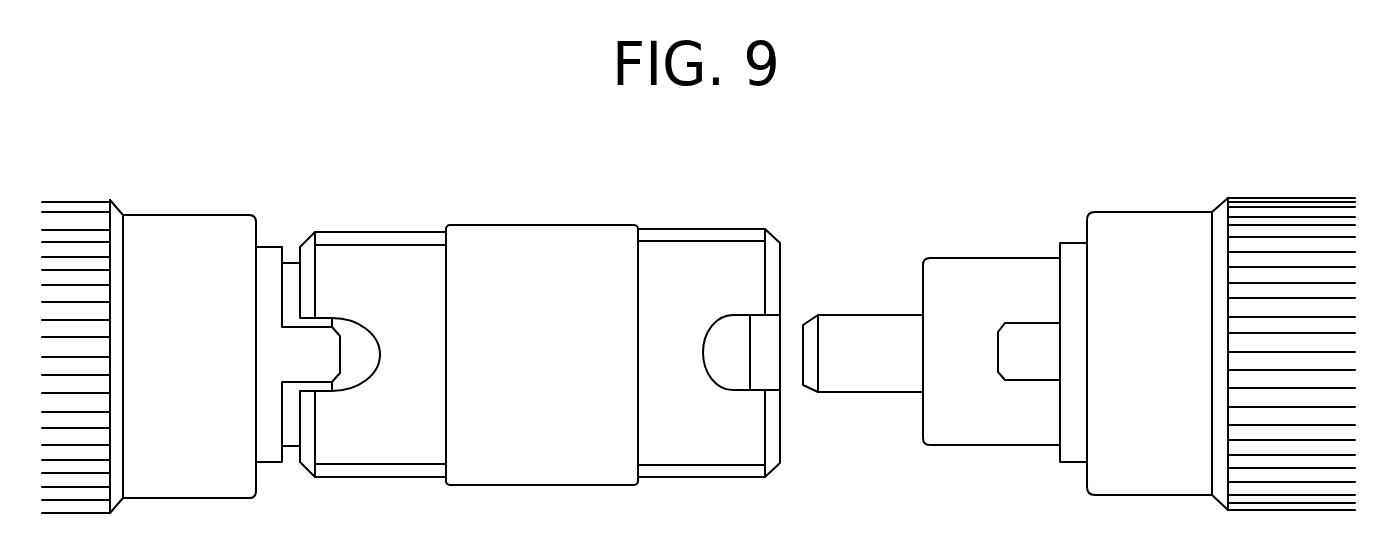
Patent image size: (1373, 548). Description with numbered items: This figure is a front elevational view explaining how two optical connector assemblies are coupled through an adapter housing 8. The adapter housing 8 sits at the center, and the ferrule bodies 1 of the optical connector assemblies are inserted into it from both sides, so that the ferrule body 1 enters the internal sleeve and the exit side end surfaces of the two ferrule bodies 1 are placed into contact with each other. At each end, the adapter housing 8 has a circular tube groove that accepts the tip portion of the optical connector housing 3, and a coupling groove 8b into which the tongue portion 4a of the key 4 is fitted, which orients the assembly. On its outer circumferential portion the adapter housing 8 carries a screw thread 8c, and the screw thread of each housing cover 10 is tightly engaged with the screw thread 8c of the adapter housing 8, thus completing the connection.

The ferrule body 1 is at (843, 325).
The optical connector housing 3 is at (940, 272).
The key 4 is at (1073, 403).
The tongue portion 4a is at (1010, 331).
The adapter housing 8 is at (498, 240).
The coupling groove 8b is at (770, 373).
The screw thread 8c is at (730, 232).
The housing cover 10 is at (1162, 227).